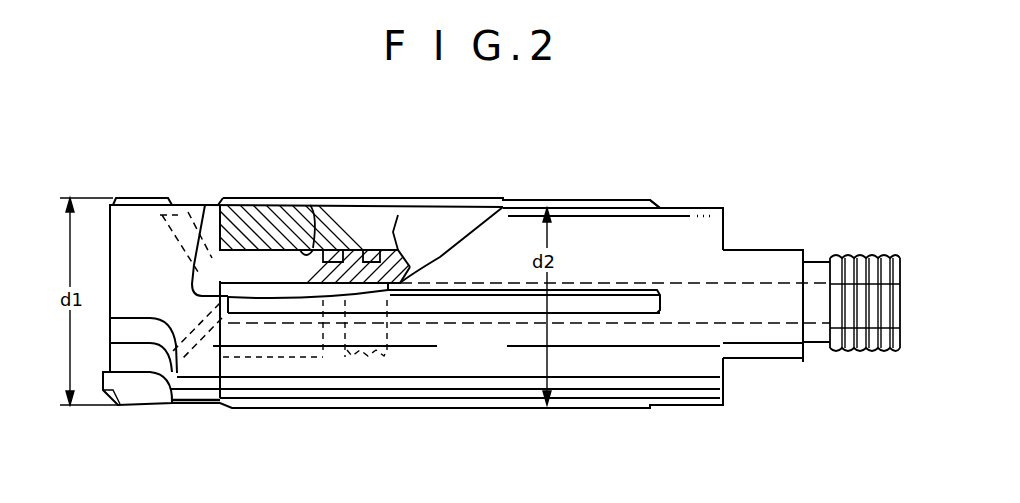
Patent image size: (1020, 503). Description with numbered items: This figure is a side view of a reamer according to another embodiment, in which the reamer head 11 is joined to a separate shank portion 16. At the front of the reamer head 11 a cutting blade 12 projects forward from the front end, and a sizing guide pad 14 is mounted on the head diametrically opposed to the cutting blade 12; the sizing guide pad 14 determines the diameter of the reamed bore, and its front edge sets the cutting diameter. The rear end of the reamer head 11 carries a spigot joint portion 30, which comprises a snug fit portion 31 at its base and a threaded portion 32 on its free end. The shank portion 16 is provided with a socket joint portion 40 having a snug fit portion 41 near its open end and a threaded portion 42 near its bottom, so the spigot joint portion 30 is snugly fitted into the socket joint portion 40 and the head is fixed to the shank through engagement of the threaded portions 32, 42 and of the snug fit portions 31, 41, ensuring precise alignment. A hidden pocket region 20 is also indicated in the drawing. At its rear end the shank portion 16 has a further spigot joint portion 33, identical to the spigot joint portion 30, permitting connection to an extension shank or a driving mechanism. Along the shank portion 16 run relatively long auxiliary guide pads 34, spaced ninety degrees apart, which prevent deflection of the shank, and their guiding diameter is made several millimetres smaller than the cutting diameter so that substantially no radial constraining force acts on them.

The reamer head 11 is at (138, 220).
The cutting blade 12 is at (135, 392).
The sizing guide pad 14 is at (127, 201).
The shank portion 16 is at (700, 217).
The pocket / chip groove (hidden) 20 is at (190, 206).
The spigot joint portion 30 is at (238, 228).
The snug fit portion 31 is at (252, 252).
The threaded portion 32 is at (365, 235).
The spigot joint portion 33 is at (816, 222).
The auxiliary guide pads 34 is at (487, 200).
The socket joint portion 40 is at (300, 209).
The snug fit portion 41 is at (320, 247).
The threaded portion 42 is at (398, 278).